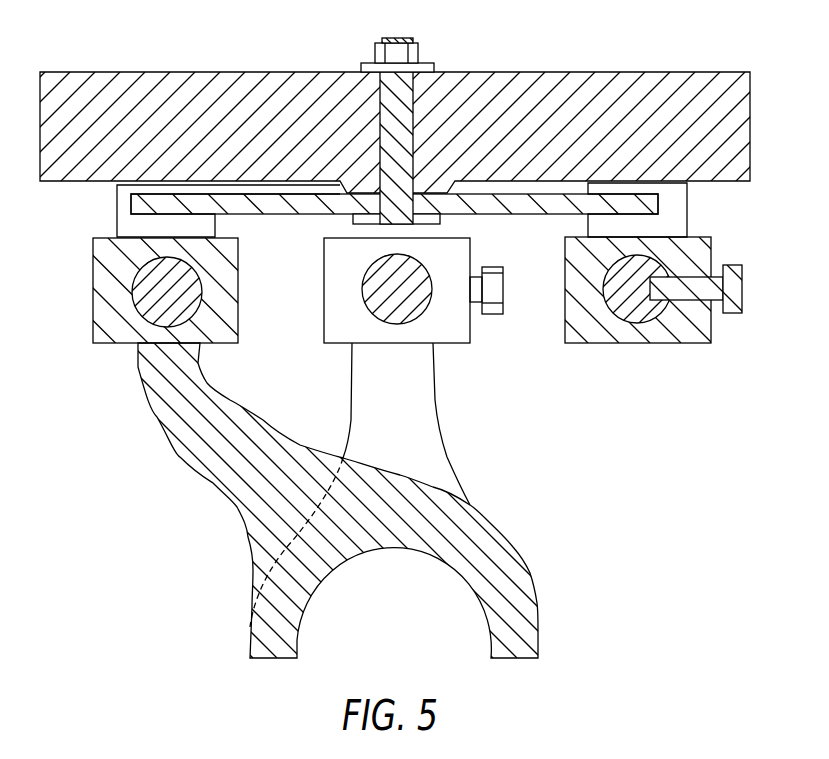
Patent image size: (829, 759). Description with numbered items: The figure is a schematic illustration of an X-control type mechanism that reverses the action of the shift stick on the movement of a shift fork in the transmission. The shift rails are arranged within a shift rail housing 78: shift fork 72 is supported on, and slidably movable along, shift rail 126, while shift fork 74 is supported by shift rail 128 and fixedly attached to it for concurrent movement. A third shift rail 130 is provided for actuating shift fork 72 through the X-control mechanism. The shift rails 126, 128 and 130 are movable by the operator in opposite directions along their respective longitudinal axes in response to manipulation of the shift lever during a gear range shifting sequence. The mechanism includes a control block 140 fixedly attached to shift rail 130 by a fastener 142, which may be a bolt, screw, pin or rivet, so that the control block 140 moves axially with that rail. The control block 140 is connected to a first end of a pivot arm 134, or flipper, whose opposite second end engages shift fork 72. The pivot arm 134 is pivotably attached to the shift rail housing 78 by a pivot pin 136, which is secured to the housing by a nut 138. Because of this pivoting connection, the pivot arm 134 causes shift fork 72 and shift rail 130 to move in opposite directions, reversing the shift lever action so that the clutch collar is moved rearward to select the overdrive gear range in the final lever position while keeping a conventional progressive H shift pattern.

The shift fork 72 is at (170, 433).
The shift fork 74 is at (445, 457).
The shift rail housing 78 is at (680, 71).
The shift rail 126 is at (132, 293).
The shift rail 128 is at (427, 307).
The third shift rail 130 is at (661, 316).
The pivot arm 134 is at (490, 214).
The pivot pin 136 is at (413, 95).
The nut 138 is at (373, 60).
The control block 140 is at (643, 309).
The fastener 142 is at (732, 314).